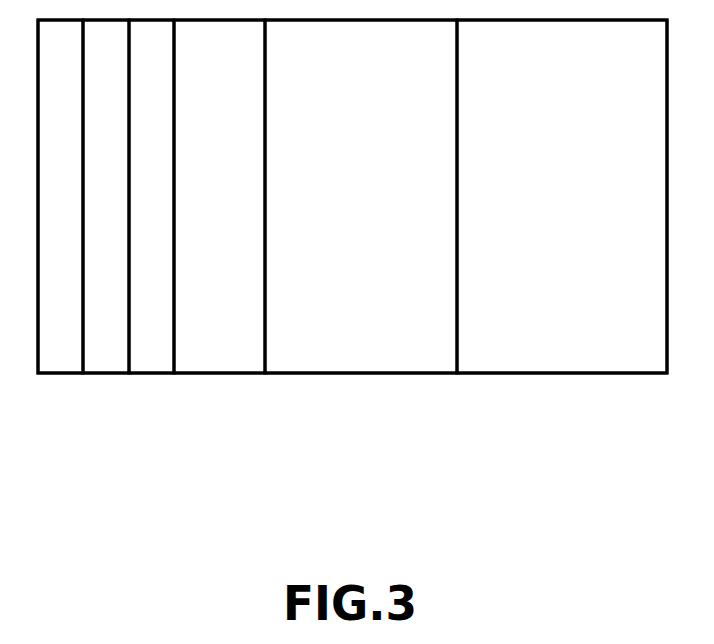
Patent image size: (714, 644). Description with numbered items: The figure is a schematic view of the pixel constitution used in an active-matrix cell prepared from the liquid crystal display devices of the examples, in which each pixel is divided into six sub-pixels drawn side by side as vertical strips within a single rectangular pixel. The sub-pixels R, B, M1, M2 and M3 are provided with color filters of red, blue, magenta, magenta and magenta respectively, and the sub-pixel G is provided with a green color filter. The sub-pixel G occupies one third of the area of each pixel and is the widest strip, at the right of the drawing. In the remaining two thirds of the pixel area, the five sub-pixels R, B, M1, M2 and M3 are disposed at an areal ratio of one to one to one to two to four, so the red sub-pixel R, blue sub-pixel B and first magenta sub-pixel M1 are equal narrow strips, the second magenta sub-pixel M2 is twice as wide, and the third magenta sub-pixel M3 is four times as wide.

The sub-pixel R is at (58, 364).
The sub-pixel B is at (108, 364).
The sub-pixel M1 is at (150, 364).
The sub-pixel M2 is at (230, 364).
The sub-pixel M3 is at (313, 364).
The sub-pixel G is at (566, 364).